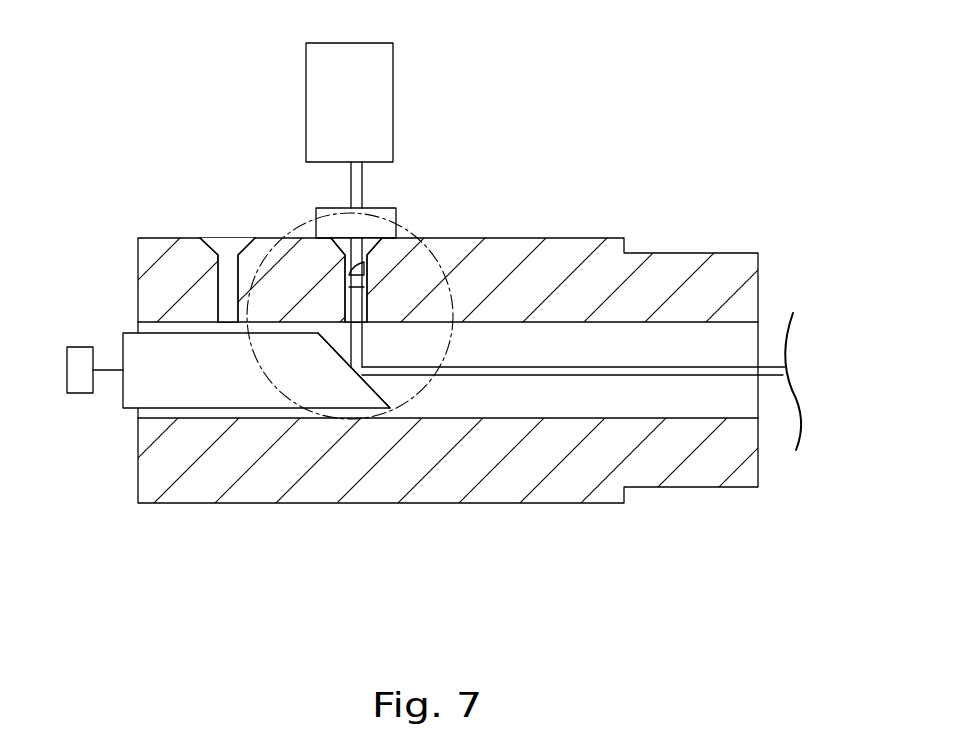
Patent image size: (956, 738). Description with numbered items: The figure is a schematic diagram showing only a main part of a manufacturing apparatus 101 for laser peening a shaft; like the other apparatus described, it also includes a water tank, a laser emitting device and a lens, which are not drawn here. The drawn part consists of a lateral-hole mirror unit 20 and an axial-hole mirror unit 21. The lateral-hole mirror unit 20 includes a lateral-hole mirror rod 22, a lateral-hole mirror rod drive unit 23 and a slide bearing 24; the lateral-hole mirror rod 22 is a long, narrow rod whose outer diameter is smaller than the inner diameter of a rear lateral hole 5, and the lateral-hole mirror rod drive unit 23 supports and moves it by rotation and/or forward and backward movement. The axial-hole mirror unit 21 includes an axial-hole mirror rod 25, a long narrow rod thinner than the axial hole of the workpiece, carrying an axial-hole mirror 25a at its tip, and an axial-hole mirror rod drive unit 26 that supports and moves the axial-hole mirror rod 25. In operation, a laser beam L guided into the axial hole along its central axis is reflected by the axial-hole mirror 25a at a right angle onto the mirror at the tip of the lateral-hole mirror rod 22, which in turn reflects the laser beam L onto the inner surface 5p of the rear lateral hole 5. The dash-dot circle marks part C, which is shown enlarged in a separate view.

The manufacturing apparatus 101 is at (617, 97).
The lateral-hole mirror unit 20 is at (476, 85).
The axial-hole mirror unit 21 is at (105, 259).
The lateral-hole mirror rod 22 is at (357, 188).
The lateral-hole mirror rod drive unit 23 is at (378, 64).
The slide bearing 24 is at (393, 215).
The axial-hole mirror rod 25 is at (128, 393).
The axial-hole mirror 25a is at (385, 393).
The axial-hole mirror rod drive unit 26 is at (83, 358).
The rear lateral hole 5 is at (297, 230).
The inner surface of rear lateral hole 5p is at (352, 270).
The laser beam L is at (678, 366).
The part C is at (272, 392).